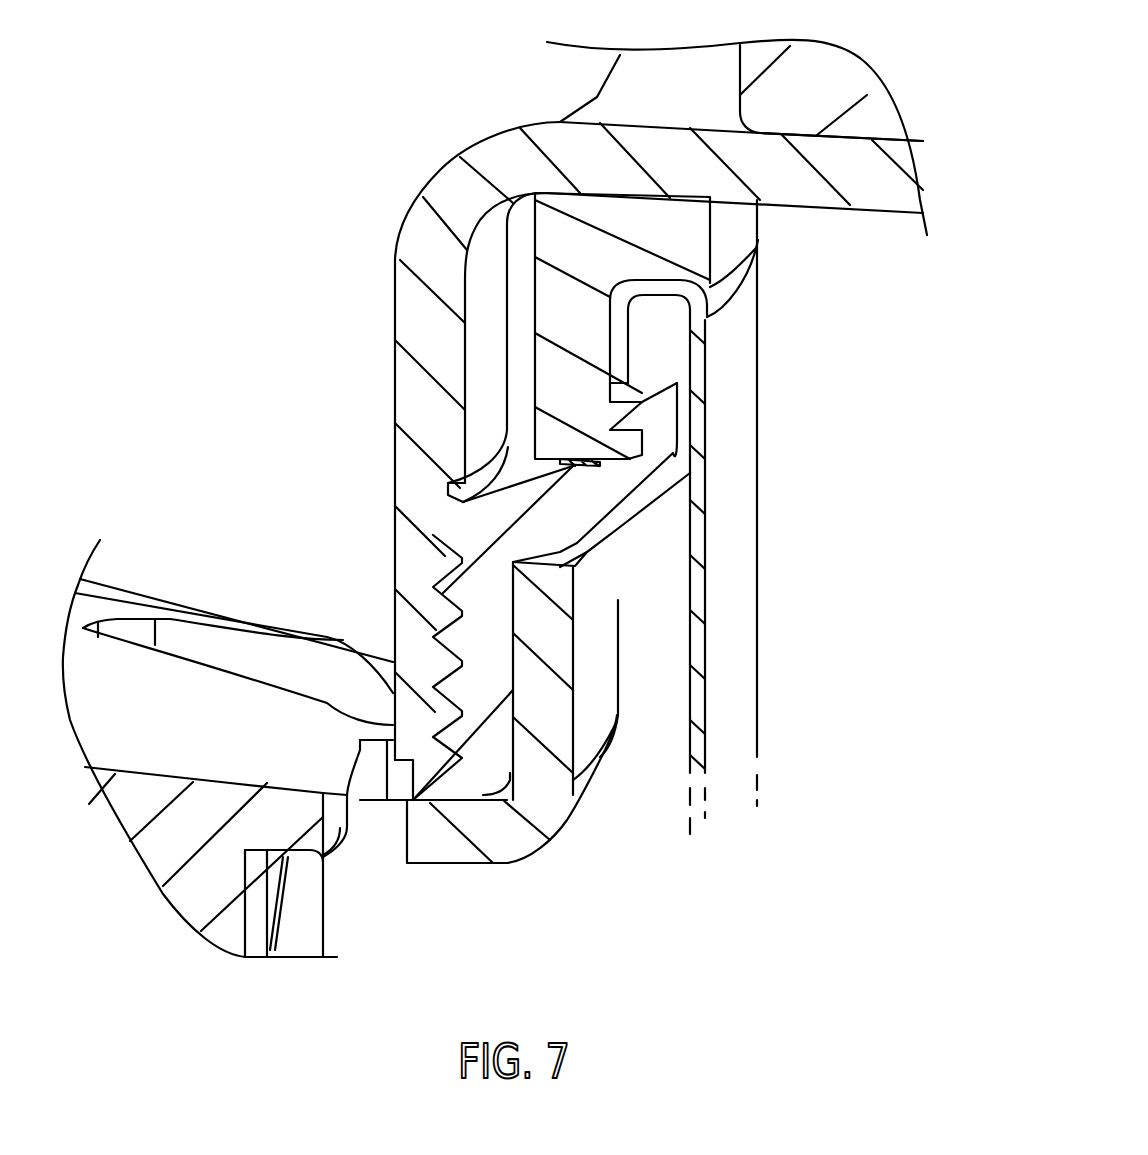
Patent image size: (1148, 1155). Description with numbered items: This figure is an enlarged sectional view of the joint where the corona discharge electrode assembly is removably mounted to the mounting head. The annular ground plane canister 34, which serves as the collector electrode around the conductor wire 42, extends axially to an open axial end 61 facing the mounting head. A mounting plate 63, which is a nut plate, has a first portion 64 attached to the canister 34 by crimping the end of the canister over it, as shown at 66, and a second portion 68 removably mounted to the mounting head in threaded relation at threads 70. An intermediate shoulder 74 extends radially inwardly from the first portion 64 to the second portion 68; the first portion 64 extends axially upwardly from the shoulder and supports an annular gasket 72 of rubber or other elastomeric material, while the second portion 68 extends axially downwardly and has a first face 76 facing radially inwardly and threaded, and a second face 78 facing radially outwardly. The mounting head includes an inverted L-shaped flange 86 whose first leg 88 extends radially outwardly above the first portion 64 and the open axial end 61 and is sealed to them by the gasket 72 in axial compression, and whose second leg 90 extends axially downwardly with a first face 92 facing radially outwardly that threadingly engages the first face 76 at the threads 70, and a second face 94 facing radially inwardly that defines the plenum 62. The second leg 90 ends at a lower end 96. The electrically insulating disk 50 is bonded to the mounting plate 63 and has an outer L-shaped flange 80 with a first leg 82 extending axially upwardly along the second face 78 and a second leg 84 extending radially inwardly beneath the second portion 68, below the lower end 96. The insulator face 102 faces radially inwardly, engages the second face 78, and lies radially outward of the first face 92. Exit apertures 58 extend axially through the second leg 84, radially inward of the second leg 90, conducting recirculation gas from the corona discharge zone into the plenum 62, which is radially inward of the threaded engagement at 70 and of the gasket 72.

The annular ground plane canister 34 is at (697, 748).
The conductor wire 42 is at (327, 930).
The electrically insulating disk 50 is at (507, 863).
The exit apertures 58 is at (210, 647).
The open axial end 61 is at (730, 289).
The plenum 62 is at (290, 357).
The mounting plate 63 is at (650, 487).
The first portion 64 is at (655, 410).
The crimped canister end 66 is at (655, 294).
The second portion 68 is at (497, 730).
The threads 70 is at (483, 640).
The annular gasket 72 is at (693, 245).
The intermediate shoulder 74 is at (567, 505).
The first face 76 is at (523, 657).
The second face 78 is at (455, 690).
The outer L-shaped flange 80 is at (527, 837).
The first leg 82 is at (553, 732).
The second leg 84 is at (467, 850).
The inverted L-shaped flange 86 is at (450, 178).
The first leg 88 is at (780, 143).
The second leg 90 is at (415, 318).
The first face 92 is at (433, 548).
The second face 94 is at (435, 640).
The lower end 96 is at (410, 760).
The face 102 is at (513, 743).